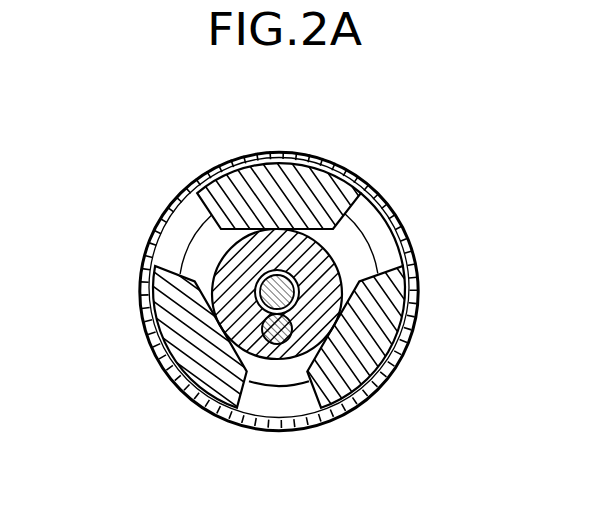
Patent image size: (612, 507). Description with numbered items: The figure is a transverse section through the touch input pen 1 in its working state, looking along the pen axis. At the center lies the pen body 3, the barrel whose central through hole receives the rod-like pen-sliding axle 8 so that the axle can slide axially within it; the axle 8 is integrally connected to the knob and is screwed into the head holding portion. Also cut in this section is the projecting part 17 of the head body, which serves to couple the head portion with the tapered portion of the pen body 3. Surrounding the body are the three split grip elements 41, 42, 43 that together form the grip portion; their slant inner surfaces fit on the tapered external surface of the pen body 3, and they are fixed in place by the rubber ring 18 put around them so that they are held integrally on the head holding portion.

The touch input pen 1 is at (387, 191).
The pen body 3 is at (260, 277).
The pen-sliding axle 8 is at (178, 216).
The projecting part 17 is at (276, 344).
The rubber ring 18 is at (399, 222).
The grip element 41 is at (307, 184).
The grip element 42 is at (390, 311).
The grip element 43 is at (156, 318).